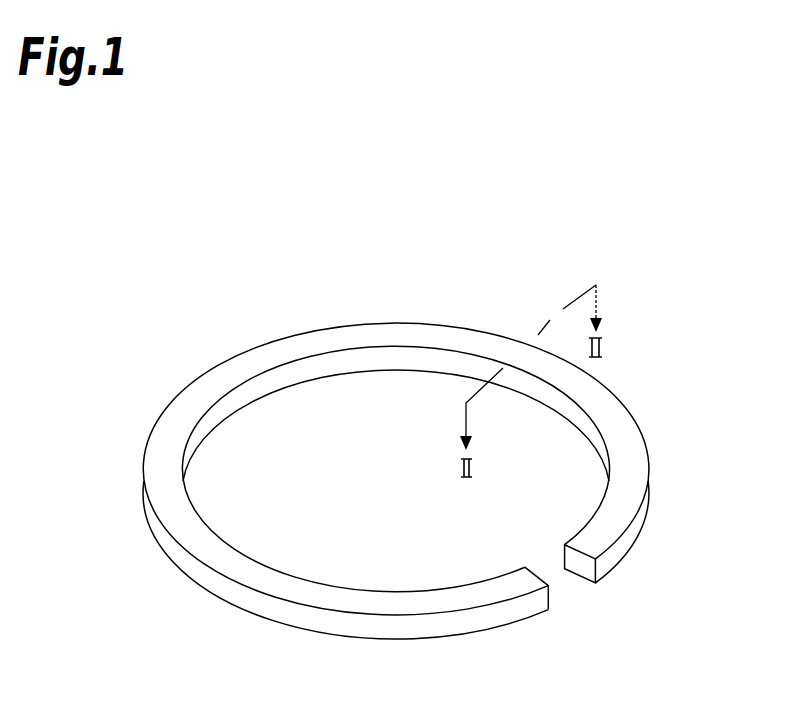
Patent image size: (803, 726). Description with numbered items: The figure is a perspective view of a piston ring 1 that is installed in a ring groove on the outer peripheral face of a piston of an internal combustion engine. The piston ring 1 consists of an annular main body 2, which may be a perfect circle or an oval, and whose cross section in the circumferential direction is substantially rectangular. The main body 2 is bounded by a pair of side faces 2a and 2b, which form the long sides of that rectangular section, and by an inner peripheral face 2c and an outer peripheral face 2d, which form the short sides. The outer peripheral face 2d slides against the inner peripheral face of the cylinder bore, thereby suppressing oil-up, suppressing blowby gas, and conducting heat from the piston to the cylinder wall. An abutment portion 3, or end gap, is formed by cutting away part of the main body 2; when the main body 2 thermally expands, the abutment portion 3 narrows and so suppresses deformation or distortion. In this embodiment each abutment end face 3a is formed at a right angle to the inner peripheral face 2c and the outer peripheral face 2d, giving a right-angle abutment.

The piston ring 1 is at (641, 358).
The main body 2 is at (192, 395).
The side face 2a is at (647, 456).
The side face 2b is at (628, 548).
The inner peripheral face 2c is at (390, 365).
The outer peripheral face 2d is at (288, 612).
The abutment portion 3 is at (575, 618).
The abutment end face 3a is at (577, 557).